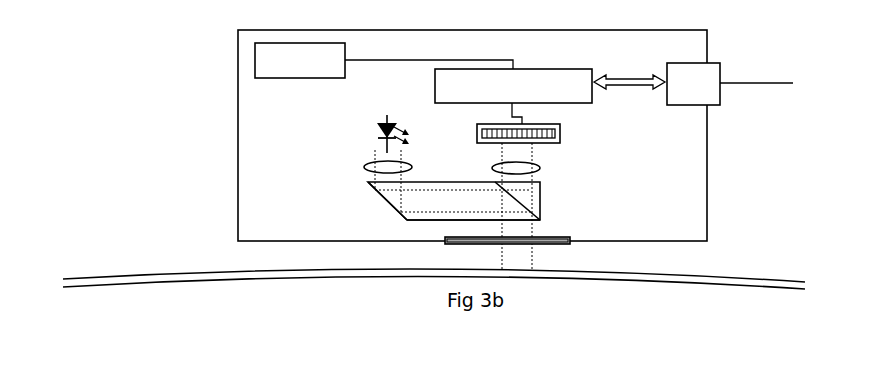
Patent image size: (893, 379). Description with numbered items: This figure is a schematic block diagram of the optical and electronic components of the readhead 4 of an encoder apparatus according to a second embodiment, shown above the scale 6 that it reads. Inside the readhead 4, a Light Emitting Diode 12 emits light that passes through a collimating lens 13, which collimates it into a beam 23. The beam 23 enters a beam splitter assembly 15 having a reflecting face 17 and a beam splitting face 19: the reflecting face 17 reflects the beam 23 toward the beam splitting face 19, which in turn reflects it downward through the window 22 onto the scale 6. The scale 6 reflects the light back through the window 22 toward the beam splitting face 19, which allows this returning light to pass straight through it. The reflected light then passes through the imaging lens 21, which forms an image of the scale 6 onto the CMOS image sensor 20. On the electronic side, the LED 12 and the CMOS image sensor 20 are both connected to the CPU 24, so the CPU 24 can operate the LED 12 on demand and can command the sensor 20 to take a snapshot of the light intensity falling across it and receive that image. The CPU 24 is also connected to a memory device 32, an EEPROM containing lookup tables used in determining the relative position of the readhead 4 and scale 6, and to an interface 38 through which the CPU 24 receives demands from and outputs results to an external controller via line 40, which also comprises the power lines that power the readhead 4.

The readhead 4 is at (226, 132).
The scale 6 is at (89, 268).
The Light Emitting Diode 12 is at (370, 125).
The collimating lens 13 is at (365, 164).
The beam splitter assembly 15 is at (555, 190).
The reflecting face 17 is at (383, 205).
The beam splitting face 19 is at (522, 202).
The CMOS image sensor 20 is at (572, 131).
The imaging lens 21 is at (540, 166).
The window 22 is at (452, 250).
The beam 23 is at (436, 219).
The CPU 24 is at (513, 96).
The memory device 32 is at (384, 60).
The interface 38 is at (657, 84).
The line 40 is at (765, 98).